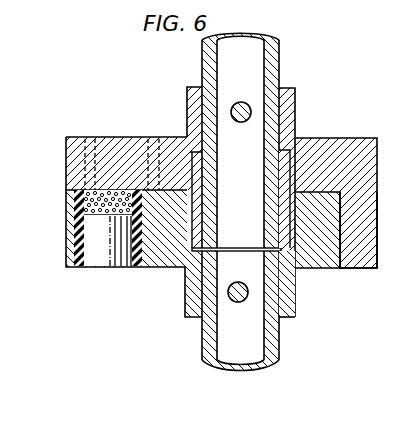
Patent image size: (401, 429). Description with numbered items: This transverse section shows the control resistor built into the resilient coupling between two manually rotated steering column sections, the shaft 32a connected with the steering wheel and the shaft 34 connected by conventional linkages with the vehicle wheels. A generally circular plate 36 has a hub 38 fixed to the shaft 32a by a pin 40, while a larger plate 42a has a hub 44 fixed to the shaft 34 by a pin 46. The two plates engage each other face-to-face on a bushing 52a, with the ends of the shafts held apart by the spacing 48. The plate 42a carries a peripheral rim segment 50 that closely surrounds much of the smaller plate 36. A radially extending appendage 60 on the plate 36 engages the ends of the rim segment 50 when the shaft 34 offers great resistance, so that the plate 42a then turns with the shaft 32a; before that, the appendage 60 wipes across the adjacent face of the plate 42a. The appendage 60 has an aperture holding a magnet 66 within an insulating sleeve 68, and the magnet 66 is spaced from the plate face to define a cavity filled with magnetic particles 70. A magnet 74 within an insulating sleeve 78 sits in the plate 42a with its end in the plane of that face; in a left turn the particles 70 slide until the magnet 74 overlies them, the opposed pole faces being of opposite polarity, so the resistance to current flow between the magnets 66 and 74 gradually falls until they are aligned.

The shaft 32a is at (279, 345).
The shaft 34 is at (281, 50).
The circular plate 36 is at (322, 266).
The hub 38 is at (296, 303).
The pin 40 is at (239, 302).
The plate 42a is at (341, 138).
The hub 44 is at (297, 93).
The pin 46 is at (241, 122).
The spacing between shaft ends 48 is at (238, 248).
The peripheral rim segment 50 is at (365, 268).
The bushing 52a is at (281, 181).
The radially extending appendage 60 is at (66, 230).
The magnet 66 is at (103, 257).
The insulating sleeve 68 is at (80, 267).
The magnetic particles 70 is at (75, 197).
The magnet 74 is at (117, 140).
The insulating sleeve 78 is at (153, 146).